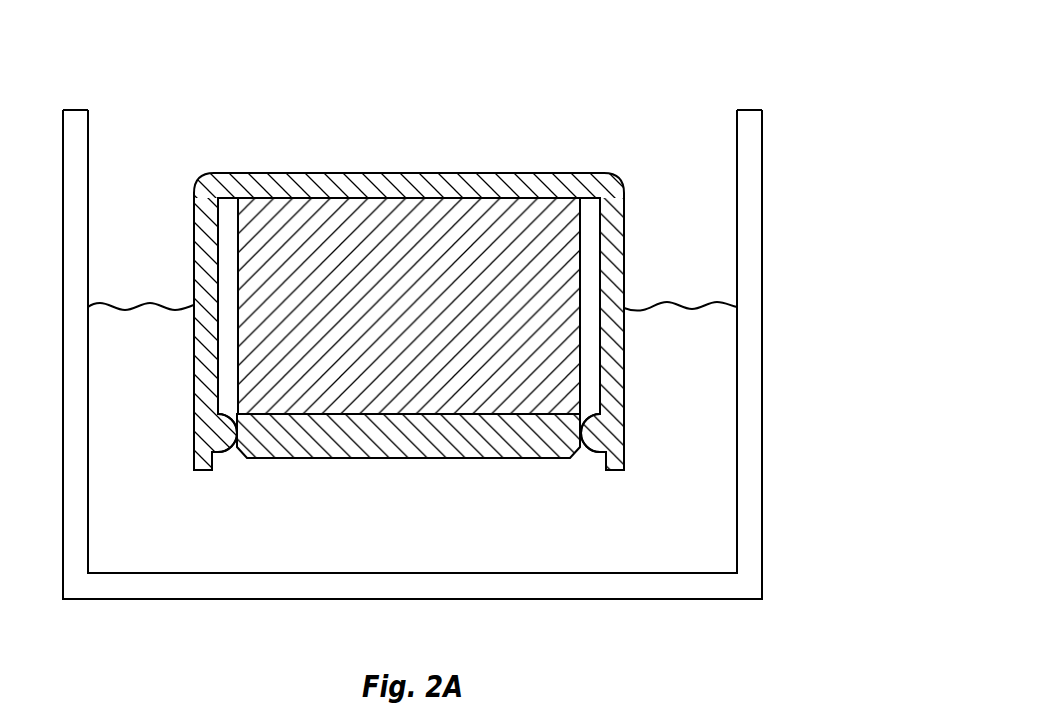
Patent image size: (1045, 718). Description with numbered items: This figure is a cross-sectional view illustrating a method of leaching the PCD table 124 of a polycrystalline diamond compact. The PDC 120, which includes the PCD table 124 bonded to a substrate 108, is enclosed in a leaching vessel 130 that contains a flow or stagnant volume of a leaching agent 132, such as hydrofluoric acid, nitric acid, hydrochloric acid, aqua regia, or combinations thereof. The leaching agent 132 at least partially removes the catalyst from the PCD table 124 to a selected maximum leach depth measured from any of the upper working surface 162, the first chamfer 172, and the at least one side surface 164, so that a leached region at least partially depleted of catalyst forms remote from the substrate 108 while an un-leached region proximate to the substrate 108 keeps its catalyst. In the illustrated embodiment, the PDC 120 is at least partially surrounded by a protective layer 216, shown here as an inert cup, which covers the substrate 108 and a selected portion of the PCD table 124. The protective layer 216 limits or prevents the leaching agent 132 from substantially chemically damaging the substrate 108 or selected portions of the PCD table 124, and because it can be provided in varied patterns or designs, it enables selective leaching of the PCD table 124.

The leaching vessel 130 is at (664, 86).
The leaching agent 132 is at (427, 557).
The PDC 120 is at (408, 326).
The protective layer 216 is at (611, 235).
The side surface 164 is at (232, 438).
The first chamfer 172 is at (580, 446).
The substrate 108 is at (437, 215).
The upper working surface 162 is at (437, 470).
The PCD table 124 is at (558, 446).